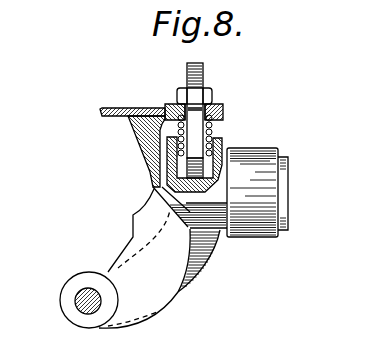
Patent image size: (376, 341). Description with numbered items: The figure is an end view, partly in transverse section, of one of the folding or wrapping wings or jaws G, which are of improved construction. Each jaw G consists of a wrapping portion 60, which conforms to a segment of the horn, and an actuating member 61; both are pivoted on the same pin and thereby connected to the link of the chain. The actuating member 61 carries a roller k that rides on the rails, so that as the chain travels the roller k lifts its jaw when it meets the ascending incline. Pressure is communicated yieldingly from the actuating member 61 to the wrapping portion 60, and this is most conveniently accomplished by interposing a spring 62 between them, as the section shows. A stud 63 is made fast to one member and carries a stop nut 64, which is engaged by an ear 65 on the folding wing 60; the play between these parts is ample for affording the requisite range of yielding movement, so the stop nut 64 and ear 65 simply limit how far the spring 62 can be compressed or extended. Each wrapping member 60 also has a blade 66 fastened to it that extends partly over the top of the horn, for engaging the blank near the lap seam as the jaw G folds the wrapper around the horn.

The wrapping portion 60 is at (150, 158).
The actuating member 61 is at (205, 180).
The spring 62 is at (222, 133).
The stud 63 is at (185, 68).
The stop nut 64 is at (177, 94).
The ear 65 is at (218, 104).
The blade 66 is at (108, 112).
The roller k is at (247, 165).
The folding wing or jaw G is at (143, 258).